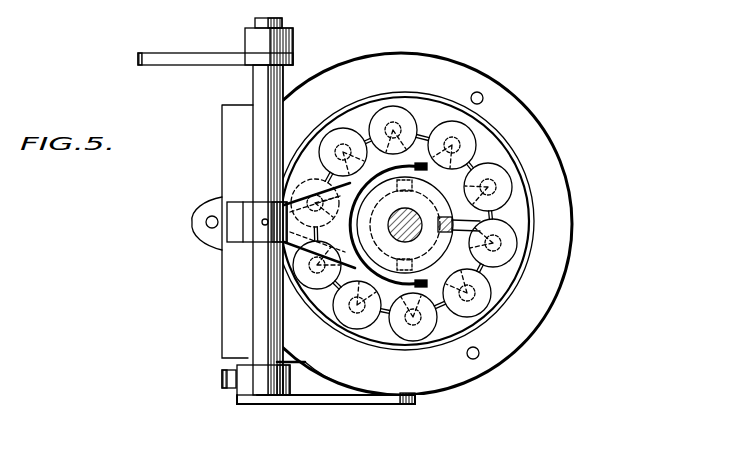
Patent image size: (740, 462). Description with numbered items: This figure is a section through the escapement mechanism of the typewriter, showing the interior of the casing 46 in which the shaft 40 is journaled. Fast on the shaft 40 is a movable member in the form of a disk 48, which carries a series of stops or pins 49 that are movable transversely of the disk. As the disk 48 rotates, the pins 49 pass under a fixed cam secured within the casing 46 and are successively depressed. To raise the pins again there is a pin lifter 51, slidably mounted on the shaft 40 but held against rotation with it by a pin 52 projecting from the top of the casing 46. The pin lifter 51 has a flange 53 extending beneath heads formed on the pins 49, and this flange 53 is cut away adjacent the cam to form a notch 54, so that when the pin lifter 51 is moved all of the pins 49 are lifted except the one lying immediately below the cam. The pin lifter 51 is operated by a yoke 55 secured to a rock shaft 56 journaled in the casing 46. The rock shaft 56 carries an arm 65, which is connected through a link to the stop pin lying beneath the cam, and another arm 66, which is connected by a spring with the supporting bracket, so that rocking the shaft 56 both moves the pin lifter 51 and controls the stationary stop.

The shaft 40 is at (410, 221).
The casing 46 is at (557, 179).
The disk 48 is at (502, 157).
The pins 49 is at (453, 123).
The pin lifter 51 is at (440, 250).
The pin 52 is at (480, 229).
The flange 53 is at (420, 140).
The notch 54 is at (385, 300).
The yoke 55 is at (272, 243).
The rock shaft 56 is at (253, 152).
The arm 65 is at (347, 405).
The arm 66 is at (198, 54).